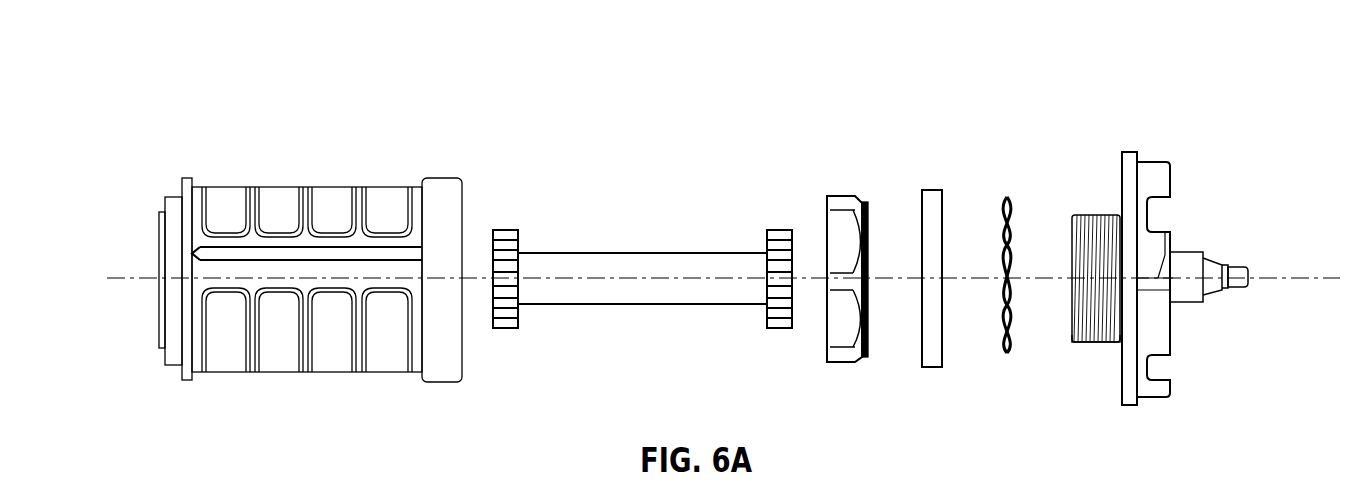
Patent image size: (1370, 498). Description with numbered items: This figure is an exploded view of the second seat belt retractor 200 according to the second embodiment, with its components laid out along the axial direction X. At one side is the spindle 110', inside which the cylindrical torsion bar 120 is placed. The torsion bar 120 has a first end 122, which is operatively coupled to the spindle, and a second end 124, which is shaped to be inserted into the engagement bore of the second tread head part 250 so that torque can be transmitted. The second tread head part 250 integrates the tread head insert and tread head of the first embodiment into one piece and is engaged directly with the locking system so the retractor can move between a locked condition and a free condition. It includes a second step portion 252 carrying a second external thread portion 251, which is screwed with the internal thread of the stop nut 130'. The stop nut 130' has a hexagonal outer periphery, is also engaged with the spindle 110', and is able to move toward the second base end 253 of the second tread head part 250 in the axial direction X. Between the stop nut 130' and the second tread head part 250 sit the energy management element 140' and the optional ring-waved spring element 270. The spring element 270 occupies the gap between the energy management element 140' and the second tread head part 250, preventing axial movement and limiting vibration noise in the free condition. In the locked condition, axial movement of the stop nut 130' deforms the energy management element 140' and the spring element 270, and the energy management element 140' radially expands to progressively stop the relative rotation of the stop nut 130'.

The second seat belt retractor 200 is at (462, 47).
The spindle 110' is at (310, 220).
The torsion bar 120 is at (640, 243).
The first end 122 is at (506, 247).
The second end 124 is at (780, 247).
The stop nut 130' is at (846, 220).
The energy management element 140' is at (932, 218).
The spring element 270 is at (1004, 187).
The second tread head part 250 is at (1150, 155).
The second external thread portion 251 is at (1095, 343).
The second step portion 252 is at (1115, 207).
The second base end 253 is at (1122, 380).
The axial direction X is at (112, 278).